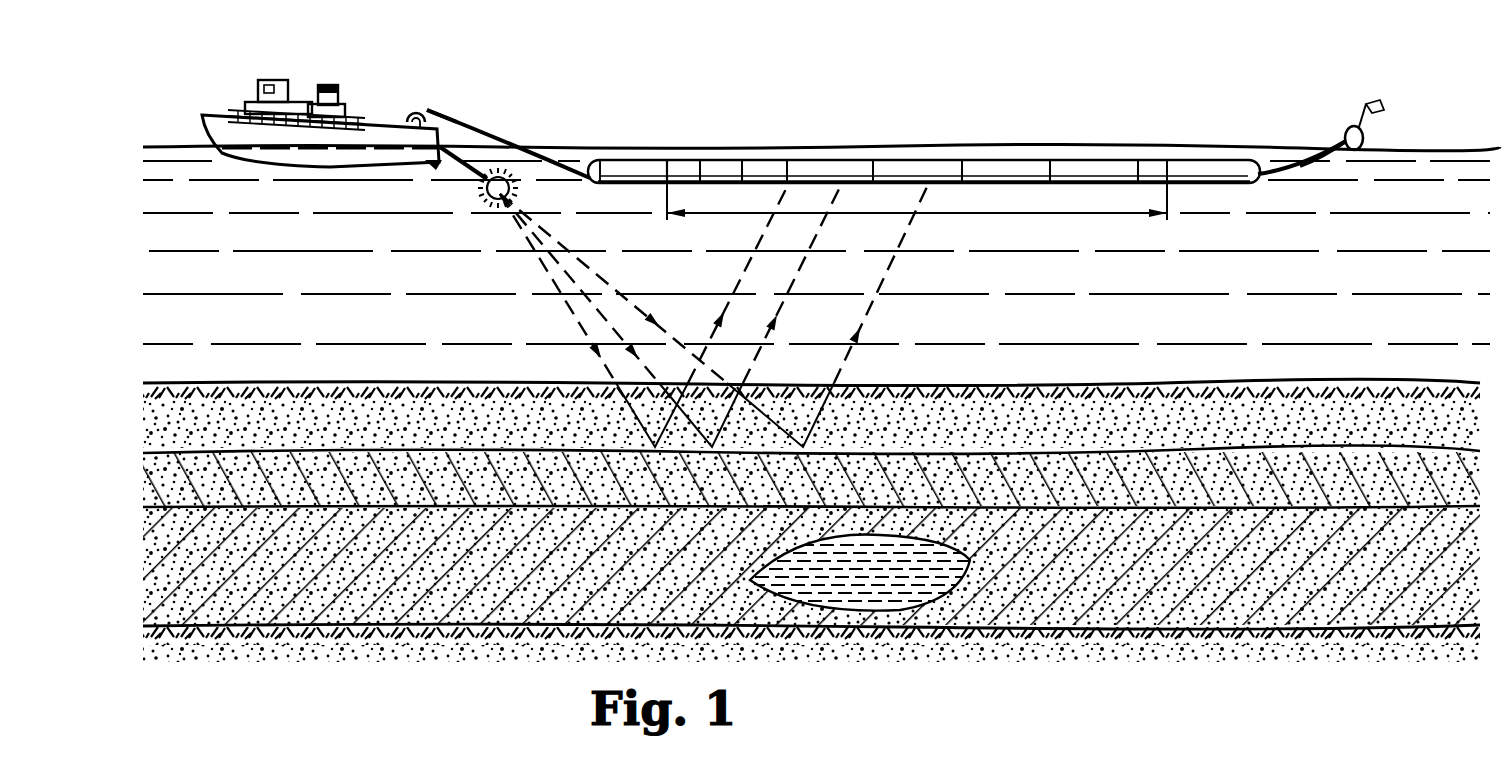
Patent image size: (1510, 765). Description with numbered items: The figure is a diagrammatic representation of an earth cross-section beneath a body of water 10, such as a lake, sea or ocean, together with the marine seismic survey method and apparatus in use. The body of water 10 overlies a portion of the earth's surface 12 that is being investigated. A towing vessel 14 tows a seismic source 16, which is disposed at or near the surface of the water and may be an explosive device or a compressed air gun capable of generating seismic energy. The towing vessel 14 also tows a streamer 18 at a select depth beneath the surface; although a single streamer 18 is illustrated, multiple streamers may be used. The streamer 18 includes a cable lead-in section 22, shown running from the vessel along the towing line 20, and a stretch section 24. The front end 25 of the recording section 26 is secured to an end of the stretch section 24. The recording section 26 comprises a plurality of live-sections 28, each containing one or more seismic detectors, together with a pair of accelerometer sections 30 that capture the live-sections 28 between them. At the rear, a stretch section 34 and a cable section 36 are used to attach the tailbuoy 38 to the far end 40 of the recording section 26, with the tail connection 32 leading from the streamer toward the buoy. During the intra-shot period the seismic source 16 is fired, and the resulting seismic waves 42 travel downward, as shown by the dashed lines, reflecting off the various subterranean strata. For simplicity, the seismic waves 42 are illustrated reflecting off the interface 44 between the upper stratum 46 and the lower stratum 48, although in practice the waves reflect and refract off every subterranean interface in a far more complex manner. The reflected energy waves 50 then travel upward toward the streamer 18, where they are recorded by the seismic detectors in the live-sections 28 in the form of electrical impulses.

The body of water 10 is at (1427, 147).
The earth's surface 12 is at (1068, 382).
The towing vessel 14 is at (297, 93).
The seismic source 16 is at (485, 198).
The streamer 18 is at (948, 162).
The lead-in cable 20 is at (503, 140).
The cable lead-in section 22 is at (450, 112).
The stretch section 24 is at (612, 163).
The front end of the recording section 25 is at (667, 163).
The recording section 26 is at (990, 214).
The live-sections 28 is at (744, 165).
The accelerometer sections 30 is at (690, 165).
The tail cable 32 is at (1290, 182).
The stretch section 34 is at (1221, 165).
The cable section 36 is at (1318, 166).
The tailbuoy 38 is at (1349, 131).
The far end of the recording section 40 is at (1168, 185).
The seismic waves 42 is at (605, 280).
The interface 44 is at (518, 445).
The stratum 46 is at (350, 385).
The stratum 48 is at (432, 470).
The reflected energy waves 50 is at (749, 262).